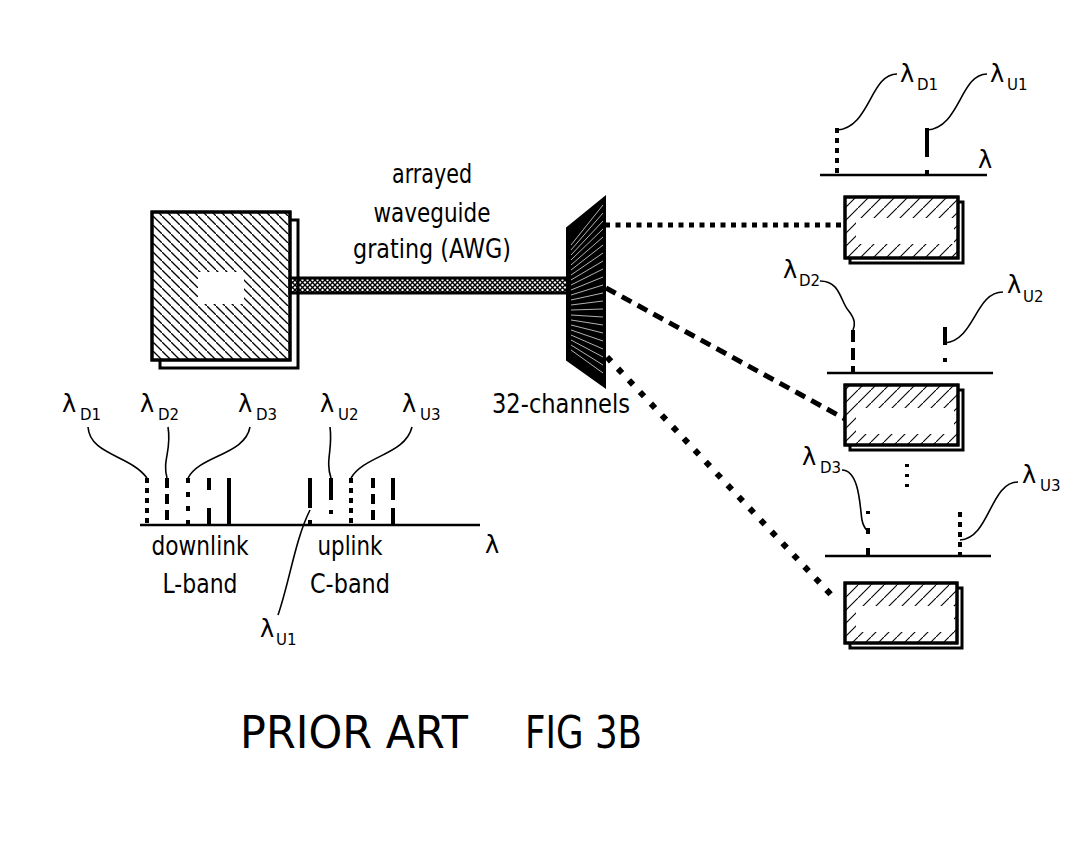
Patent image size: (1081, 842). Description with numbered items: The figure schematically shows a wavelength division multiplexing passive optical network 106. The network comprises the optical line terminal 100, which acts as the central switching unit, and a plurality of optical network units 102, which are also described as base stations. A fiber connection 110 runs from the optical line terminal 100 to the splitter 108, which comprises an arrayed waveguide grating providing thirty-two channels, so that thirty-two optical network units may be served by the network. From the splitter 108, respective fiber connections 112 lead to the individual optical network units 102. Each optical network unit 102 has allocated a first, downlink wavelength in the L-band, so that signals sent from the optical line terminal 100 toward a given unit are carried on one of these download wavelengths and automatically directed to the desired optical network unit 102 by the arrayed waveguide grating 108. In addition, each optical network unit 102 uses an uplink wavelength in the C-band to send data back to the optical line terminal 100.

The optical line terminal 100 is at (222, 212).
The fiber connection 110 is at (333, 278).
The passive optical network 106 is at (447, 130).
The splitter 108 is at (586, 210).
The fiber connections 112 is at (667, 224).
The optical network units 102 is at (960, 228).